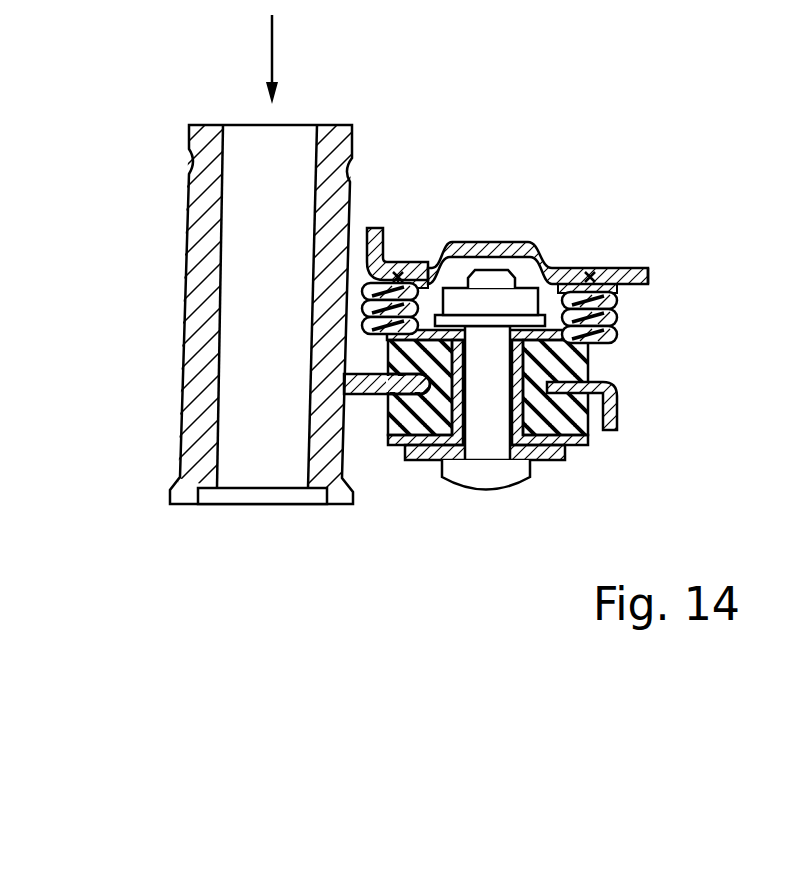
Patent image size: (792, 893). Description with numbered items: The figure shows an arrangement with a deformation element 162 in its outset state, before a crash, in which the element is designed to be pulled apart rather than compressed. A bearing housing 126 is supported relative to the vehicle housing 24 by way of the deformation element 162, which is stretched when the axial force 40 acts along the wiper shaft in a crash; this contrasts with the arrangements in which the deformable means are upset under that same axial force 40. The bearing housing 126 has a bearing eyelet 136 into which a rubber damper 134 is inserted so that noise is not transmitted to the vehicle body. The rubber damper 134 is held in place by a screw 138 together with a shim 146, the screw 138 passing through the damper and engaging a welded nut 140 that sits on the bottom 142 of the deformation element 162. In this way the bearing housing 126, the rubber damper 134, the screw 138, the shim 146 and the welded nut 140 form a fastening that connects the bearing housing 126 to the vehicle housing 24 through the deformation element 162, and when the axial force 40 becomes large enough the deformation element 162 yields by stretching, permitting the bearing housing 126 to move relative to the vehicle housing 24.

The axial force 40 is at (273, 51).
The vehicle housing 24 is at (610, 277).
The bearing housing 126 is at (190, 477).
The rubber damper 134 is at (569, 356).
The bearing eyelet 136 is at (603, 395).
The screw 138 is at (490, 478).
The welded nut 140 is at (513, 305).
The bottom 142 is at (428, 330).
The shim 146 is at (413, 453).
The deformation element 162 is at (700, 211).